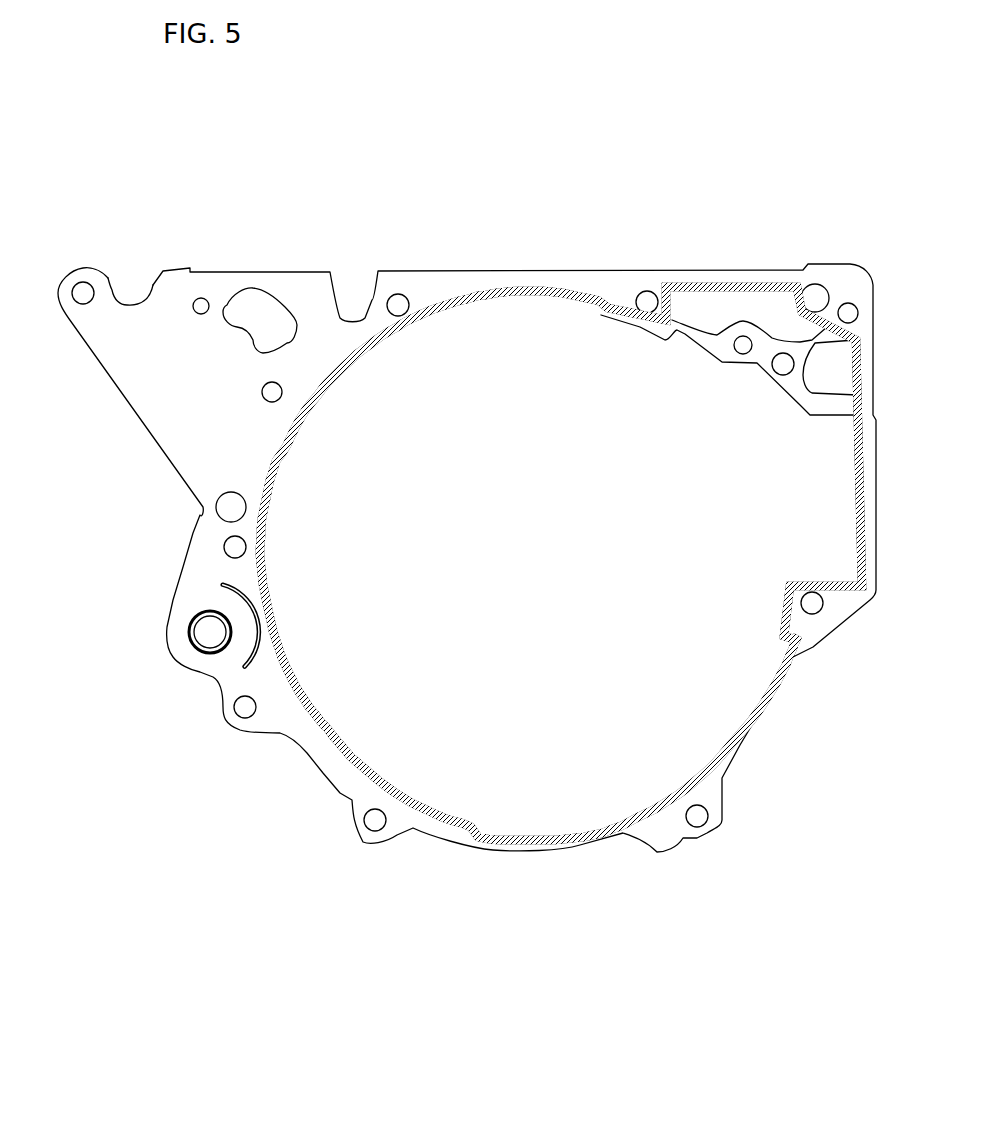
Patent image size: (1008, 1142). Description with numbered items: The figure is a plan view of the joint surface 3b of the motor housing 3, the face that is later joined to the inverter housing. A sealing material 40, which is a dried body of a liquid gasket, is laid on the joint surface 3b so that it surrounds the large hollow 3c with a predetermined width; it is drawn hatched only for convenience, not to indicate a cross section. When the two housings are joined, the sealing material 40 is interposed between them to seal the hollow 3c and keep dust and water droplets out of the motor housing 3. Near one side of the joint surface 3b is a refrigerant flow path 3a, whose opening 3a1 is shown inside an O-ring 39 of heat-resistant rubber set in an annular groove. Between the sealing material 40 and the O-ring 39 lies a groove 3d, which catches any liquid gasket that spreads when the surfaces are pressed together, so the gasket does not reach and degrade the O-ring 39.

The motor housing 3 is at (787, 218).
The refrigerant flow path 3a is at (132, 671).
The hole of boss portion 3a1 is at (212, 632).
The joint surface 3b is at (115, 290).
The hollow 3c is at (561, 628).
The groove 3d is at (223, 585).
The O-ring 39 is at (191, 617).
The sealing material 40 is at (540, 775).